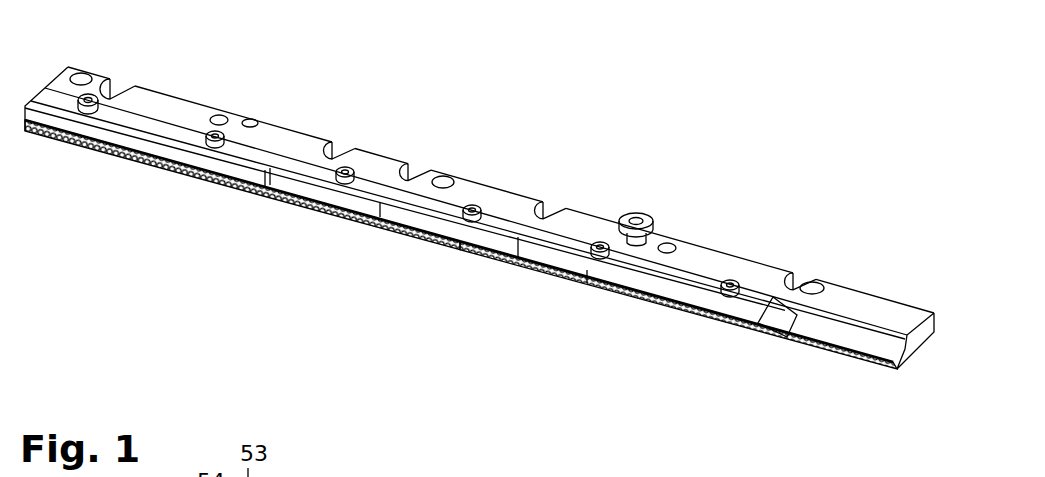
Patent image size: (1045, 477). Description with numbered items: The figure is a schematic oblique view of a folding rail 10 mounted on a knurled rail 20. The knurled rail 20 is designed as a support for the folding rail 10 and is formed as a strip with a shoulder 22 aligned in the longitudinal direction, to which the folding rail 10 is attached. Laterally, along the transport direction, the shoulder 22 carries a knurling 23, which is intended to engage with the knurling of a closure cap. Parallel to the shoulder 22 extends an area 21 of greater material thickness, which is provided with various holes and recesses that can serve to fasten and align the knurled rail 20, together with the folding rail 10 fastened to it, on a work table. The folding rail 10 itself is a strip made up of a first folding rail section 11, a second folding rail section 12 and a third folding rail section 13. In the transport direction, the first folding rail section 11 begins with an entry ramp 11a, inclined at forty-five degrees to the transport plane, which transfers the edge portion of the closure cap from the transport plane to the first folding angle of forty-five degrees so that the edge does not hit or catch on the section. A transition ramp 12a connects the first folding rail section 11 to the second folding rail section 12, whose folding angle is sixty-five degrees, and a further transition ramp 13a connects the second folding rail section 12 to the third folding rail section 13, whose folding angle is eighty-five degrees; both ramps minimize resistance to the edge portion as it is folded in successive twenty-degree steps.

The folding rail 10 is at (160, 122).
The knurled rail 20 is at (297, 138).
The area with a greater material thickness 21 is at (745, 270).
The shoulder 22 is at (812, 340).
The knurling 23 is at (117, 158).
The first folding rail section 11 is at (587, 272).
The entry ramp 11a is at (775, 322).
The second folding rail section 12 is at (380, 205).
The transition ramp 12a is at (520, 243).
The third folding rail section 13 is at (205, 178).
The transition ramp 13a is at (264, 190).